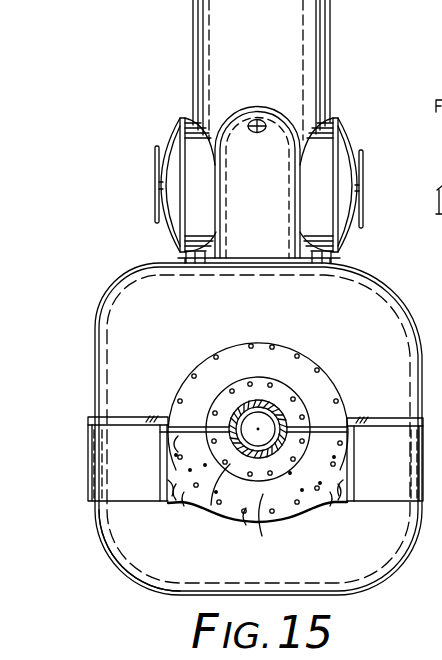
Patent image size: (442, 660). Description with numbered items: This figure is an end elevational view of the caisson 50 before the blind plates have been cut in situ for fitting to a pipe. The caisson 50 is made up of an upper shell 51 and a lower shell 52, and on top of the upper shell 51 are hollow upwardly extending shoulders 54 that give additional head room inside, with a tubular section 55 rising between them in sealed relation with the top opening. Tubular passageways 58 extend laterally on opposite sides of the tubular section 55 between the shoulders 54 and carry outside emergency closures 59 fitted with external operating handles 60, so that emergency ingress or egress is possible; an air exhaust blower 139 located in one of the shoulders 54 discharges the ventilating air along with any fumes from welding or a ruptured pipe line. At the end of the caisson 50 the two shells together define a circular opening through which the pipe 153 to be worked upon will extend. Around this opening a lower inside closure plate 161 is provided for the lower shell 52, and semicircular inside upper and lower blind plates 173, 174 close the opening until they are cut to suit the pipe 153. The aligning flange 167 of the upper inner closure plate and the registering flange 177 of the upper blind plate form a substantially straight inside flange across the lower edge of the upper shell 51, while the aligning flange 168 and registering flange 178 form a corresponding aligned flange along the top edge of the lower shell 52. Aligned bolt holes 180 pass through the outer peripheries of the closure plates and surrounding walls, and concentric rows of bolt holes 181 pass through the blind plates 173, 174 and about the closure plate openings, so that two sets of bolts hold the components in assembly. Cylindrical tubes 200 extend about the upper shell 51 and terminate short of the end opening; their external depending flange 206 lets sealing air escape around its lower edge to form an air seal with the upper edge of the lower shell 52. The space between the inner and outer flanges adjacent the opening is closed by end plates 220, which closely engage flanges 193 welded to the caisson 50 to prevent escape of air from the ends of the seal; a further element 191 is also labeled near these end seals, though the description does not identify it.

The caisson 50 is at (112, 280).
The upper shell 51 is at (131, 321).
The lower shell 52 is at (120, 545).
The shoulders 54 is at (234, 128).
The tubular section 55 is at (215, 30).
The tubular passageways 58 is at (195, 125).
The outside emergency closures 59 is at (170, 140).
The external operating handles 60 is at (156, 162).
The air exhaust blower 139 is at (266, 138).
The pipe 153 is at (274, 406).
The lower inside closure plate 161 is at (262, 524).
The aligning flange 167 is at (182, 426).
The aligning flange 168 is at (164, 448).
The inside upper blind plate 173 is at (222, 407).
The inside lower blind plate 174 is at (212, 512).
The registering flange 177 is at (297, 422).
The registering flange 178 is at (288, 474).
The bolt holes 180 is at (268, 384).
The bolt holes 181 is at (212, 350).
The tab 191 is at (168, 514).
The flanges 193 is at (166, 502).
The cylindrical tubes 200 is at (90, 418).
The external depending flange 206 is at (90, 460).
The end plates 220 is at (148, 462).